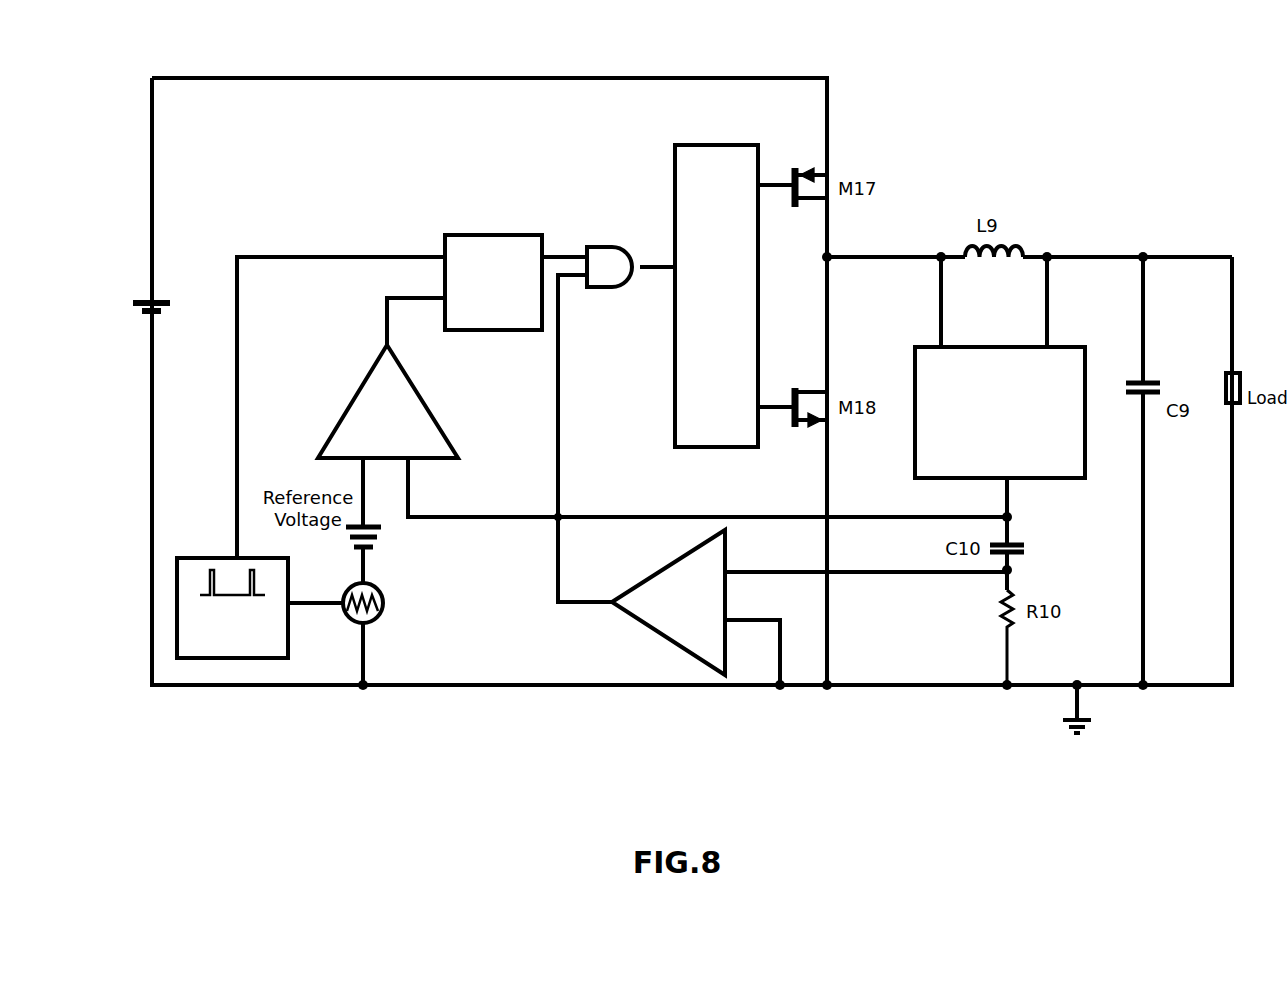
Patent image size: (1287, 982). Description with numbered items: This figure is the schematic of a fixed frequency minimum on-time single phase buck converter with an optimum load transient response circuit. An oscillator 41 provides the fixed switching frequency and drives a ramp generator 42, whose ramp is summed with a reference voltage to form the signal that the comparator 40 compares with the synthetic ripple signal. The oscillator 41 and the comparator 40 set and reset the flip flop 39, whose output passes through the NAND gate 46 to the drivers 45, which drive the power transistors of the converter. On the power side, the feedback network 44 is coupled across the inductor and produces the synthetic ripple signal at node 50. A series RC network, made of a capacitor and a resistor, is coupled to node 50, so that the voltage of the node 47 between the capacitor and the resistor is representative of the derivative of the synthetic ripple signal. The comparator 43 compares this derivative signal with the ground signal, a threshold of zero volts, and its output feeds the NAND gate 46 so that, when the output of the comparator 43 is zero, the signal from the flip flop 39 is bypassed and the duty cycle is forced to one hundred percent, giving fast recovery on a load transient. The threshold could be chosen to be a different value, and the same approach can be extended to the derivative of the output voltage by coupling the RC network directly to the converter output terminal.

The flip flop 39 is at (469, 234).
The comparator 40 is at (345, 400).
The oscillator 41 is at (228, 558).
The ramp generator 42 is at (386, 597).
The comparator 43 is at (655, 572).
The feedback network 44 is at (970, 347).
The drivers 45 is at (720, 145).
The NAND gate 46 is at (590, 247).
The node 47 is at (1012, 572).
The node 50 is at (1012, 518).